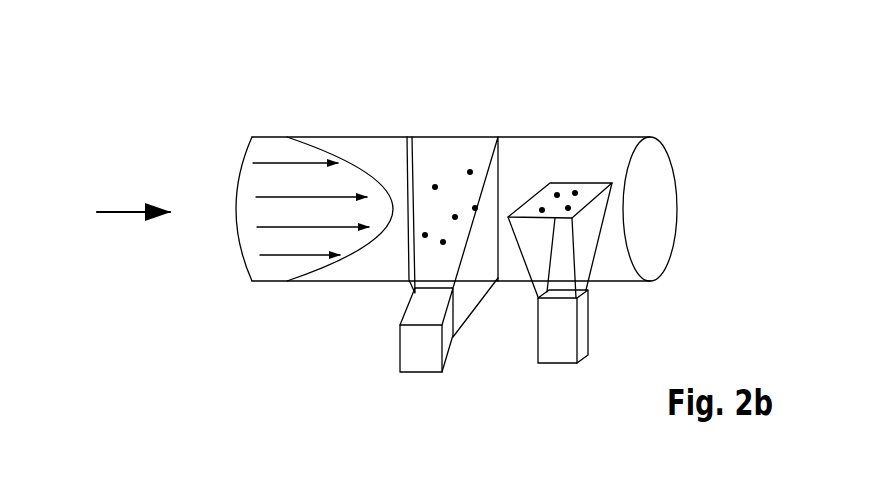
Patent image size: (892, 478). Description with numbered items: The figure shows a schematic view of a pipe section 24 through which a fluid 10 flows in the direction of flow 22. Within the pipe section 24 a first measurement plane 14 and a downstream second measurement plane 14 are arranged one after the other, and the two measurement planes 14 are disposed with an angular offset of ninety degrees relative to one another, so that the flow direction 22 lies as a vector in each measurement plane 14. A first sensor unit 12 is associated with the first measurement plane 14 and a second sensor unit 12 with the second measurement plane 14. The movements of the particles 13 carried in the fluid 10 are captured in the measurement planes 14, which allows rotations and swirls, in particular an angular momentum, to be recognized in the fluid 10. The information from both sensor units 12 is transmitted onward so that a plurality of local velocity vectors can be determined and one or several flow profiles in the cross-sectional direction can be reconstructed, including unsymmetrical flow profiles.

The fluid 10 is at (273, 190).
The sensor unit 12 is at (393, 338).
The particles 13 is at (435, 187).
The measurement plane 14 is at (472, 152).
The direction of flow 22 is at (120, 212).
The pipe section 24 is at (575, 137).